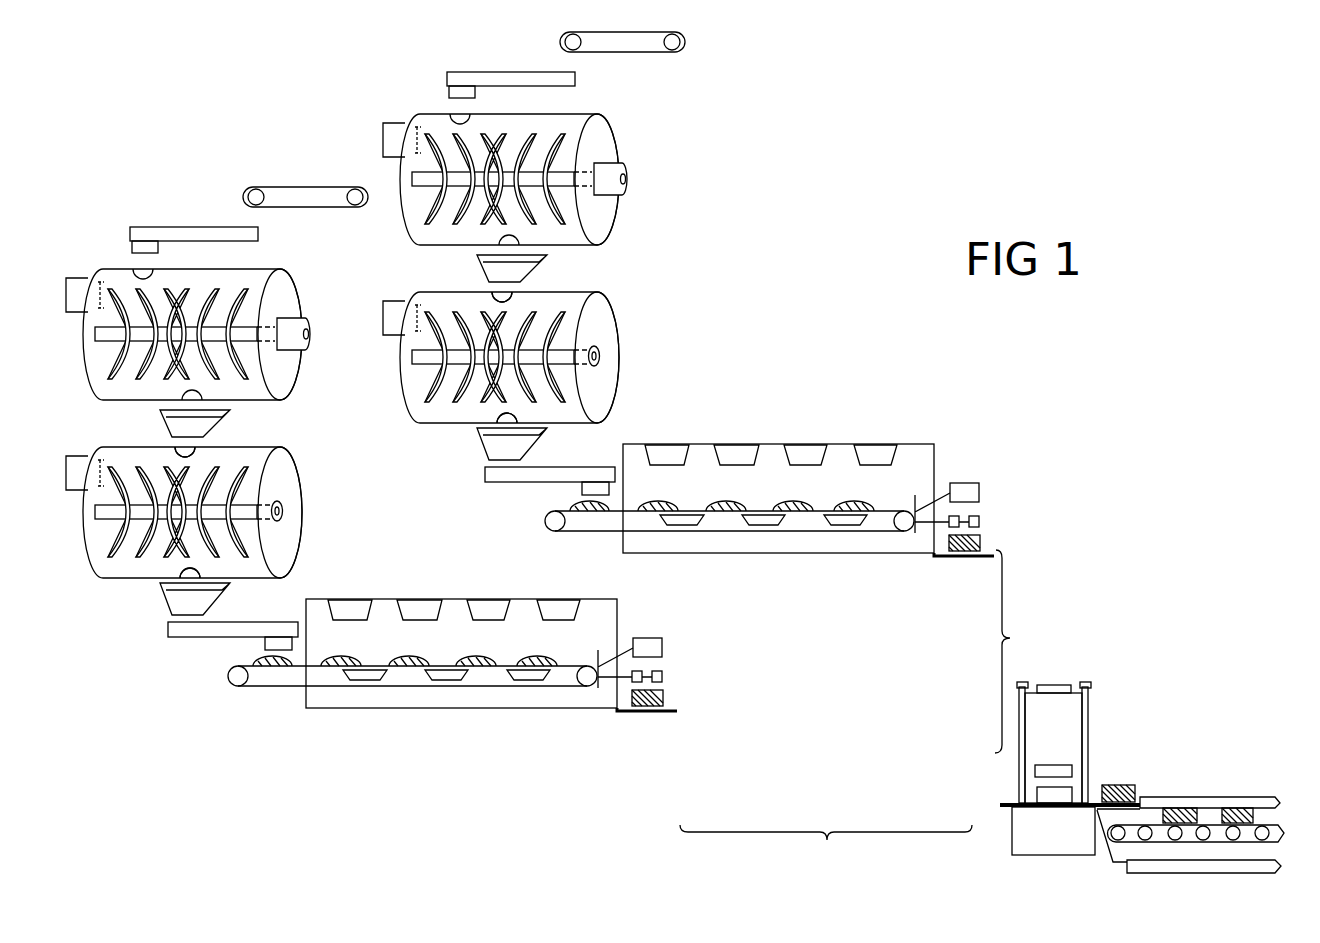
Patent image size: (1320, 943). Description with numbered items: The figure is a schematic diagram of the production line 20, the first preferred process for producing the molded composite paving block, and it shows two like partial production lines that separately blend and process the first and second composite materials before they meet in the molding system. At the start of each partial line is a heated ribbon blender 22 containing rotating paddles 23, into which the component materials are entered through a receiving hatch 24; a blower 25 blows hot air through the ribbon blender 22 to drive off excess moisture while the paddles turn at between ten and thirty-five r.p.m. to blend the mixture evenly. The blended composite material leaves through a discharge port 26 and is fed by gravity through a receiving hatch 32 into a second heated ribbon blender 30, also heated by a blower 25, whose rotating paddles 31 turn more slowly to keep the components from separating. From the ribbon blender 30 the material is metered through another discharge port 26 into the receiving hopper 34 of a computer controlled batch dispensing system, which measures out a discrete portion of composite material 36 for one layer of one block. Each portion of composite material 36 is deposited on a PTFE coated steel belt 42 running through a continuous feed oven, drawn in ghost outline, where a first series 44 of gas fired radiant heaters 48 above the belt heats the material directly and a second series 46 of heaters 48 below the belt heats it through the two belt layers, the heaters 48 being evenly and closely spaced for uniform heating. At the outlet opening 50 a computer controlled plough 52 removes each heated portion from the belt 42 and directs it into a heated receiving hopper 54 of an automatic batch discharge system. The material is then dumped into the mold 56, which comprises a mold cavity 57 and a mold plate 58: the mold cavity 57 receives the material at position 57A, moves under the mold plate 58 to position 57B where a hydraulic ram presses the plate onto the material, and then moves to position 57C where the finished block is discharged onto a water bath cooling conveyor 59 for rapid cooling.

The production line 20 is at (737, 179).
The ribbon blender 22 is at (298, 294).
The rotating paddles 23 is at (246, 289).
The receiving hatch 24 is at (146, 270).
The blower 25 is at (78, 278).
The discharge port 26 is at (185, 403).
The ribbon blender 30 is at (298, 472).
The rotating paddles 31 is at (248, 569).
The receiving hatch 32 is at (197, 448).
The receiving hopper 34 is at (168, 629).
The portion of composite material 36 is at (254, 663).
The PTFE coated steel belt 42 is at (483, 628).
The first series of heaters 44 is at (332, 611).
The second series of heaters 46 is at (340, 679).
The gas fired radiant heaters 48 is at (420, 621).
The outlet opening 50 is at (618, 620).
The plough 52 is at (663, 646).
The heated receiving hopper 54 is at (663, 675).
The mold 56 is at (1024, 772).
The mold cavity 57 is at (1075, 792).
The position 57A is at (651, 713).
The position 57B is at (1052, 798).
The position 57C is at (1138, 785).
The mold plate 58 is at (1050, 765).
The water bath cooling conveyor 59 is at (1220, 798).